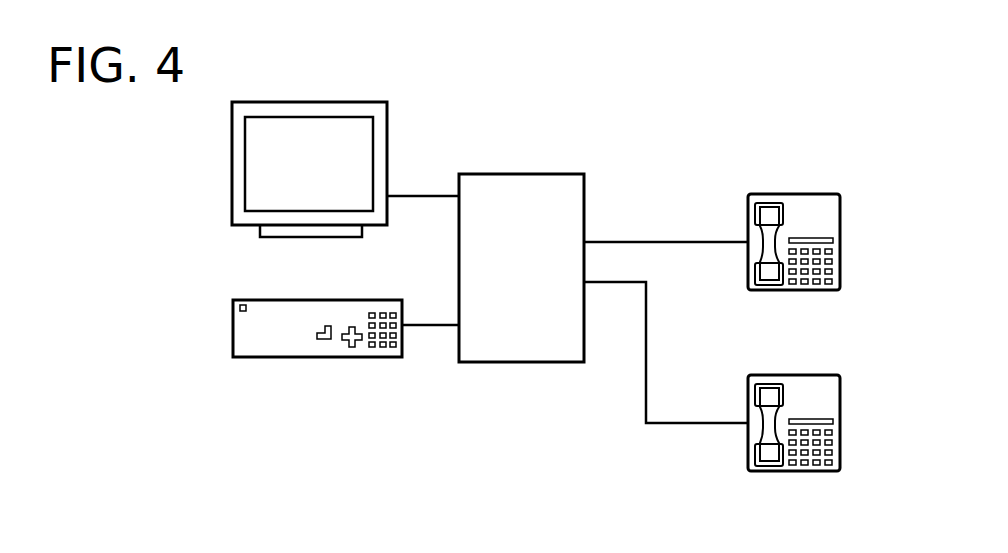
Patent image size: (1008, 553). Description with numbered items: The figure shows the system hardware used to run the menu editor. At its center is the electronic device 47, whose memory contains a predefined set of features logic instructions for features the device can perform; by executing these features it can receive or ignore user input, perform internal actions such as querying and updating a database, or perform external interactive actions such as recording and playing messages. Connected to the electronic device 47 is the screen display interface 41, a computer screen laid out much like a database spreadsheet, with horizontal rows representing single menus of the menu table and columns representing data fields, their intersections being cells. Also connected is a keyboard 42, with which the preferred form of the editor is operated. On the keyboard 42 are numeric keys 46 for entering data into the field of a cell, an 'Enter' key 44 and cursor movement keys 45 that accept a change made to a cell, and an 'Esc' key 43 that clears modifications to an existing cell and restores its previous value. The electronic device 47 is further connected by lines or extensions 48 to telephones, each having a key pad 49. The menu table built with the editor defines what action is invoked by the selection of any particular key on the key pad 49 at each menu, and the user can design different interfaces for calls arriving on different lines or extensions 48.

The screen display interface 41 is at (233, 165).
The keyboard 42 is at (233, 328).
The 'Esc' key 43 is at (237, 304).
The 'Enter' key 44 is at (313, 325).
The cursor movement keys 45 is at (345, 318).
The numeric keys 46 is at (380, 312).
The electronic device 47 is at (502, 174).
The lines or extensions 48 is at (682, 243).
The key pad 49 is at (823, 251).